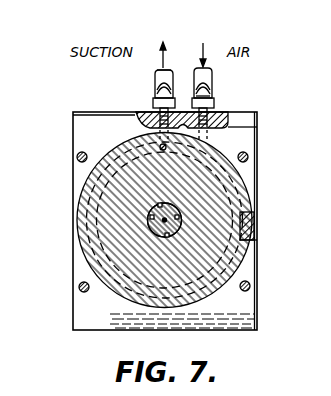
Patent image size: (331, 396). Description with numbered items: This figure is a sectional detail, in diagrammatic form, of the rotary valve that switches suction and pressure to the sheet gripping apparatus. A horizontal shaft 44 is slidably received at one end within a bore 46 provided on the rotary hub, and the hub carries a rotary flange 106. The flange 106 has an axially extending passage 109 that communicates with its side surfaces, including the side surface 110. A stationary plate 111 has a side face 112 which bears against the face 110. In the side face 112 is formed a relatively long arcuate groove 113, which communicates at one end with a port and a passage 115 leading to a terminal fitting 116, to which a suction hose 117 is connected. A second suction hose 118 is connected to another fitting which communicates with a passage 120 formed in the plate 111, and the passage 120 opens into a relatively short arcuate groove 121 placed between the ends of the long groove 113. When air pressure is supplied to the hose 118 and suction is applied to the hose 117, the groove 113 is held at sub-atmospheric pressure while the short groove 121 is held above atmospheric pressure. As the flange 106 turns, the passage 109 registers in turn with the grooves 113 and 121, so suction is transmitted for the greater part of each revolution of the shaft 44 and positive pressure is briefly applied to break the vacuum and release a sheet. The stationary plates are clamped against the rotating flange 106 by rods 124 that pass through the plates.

The horizontal shaft 44 is at (176, 212).
The bore 46 is at (156, 230).
The flange 106 is at (83, 219).
The axially extending passage 109 is at (159, 145).
The side surface 110 is at (206, 98).
The stationary plate 111 is at (257, 262).
The side face 112 is at (87, 141).
The arcuate groove 113 is at (246, 232).
The passage 115 is at (150, 121).
The terminal fitting 116 is at (158, 90).
The suction hose 117 is at (163, 70).
The second suction hose 118 is at (212, 77).
The passage 120 is at (248, 127).
The short arcuate groove 121 is at (228, 170).
The rods 124 is at (79, 288).